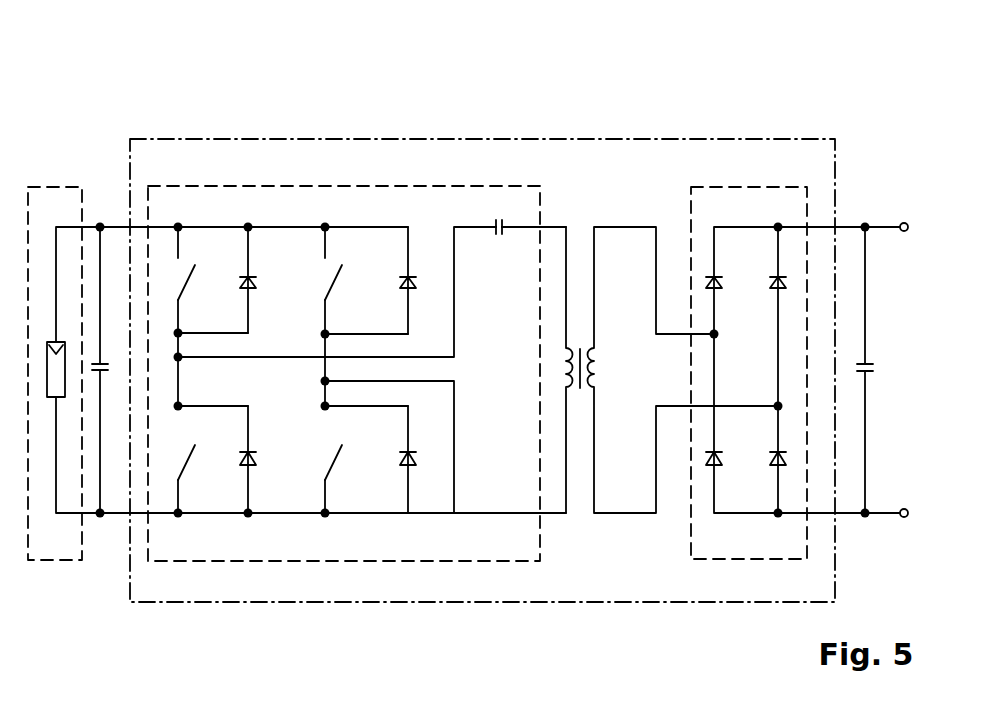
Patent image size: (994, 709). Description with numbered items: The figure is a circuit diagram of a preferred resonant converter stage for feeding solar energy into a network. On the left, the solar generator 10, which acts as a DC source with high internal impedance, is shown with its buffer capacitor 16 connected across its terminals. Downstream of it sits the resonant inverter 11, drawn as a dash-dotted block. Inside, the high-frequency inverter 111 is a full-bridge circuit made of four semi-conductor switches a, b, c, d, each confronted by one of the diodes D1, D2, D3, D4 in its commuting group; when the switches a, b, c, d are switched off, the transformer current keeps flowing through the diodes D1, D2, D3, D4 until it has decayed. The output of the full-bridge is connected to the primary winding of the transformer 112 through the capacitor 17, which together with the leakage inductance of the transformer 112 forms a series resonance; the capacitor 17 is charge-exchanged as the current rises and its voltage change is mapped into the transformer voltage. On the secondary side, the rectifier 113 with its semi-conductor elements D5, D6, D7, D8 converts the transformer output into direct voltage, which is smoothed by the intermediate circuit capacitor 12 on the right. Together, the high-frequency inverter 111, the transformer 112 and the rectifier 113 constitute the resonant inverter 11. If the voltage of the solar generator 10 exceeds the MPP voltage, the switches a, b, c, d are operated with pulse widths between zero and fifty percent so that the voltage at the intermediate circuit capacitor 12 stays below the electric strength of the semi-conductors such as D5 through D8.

The solar generator 10 is at (55, 187).
The buffer capacitor 16 is at (107, 332).
The resonant inverter 11 is at (378, 139).
The high-frequency inverter 111 is at (357, 314).
The capacitor 17 is at (503, 226).
The transformer 112 is at (580, 227).
The rectifier 113 is at (799, 313).
The intermediate circuit capacitor 12 is at (873, 343).
The diode D1 is at (262, 274).
The diode D2 is at (421, 274).
The diode D3 is at (254, 465).
The diode D4 is at (414, 465).
The semi-conductor switch D5 is at (725, 274).
The semi-conductor switch D6 is at (771, 287).
The semi-conductor switch D7 is at (716, 466).
The semi-conductor switch D8 is at (771, 458).
The semi-conductor switch a is at (192, 277).
The semi-conductor switch b is at (339, 277).
The semi-conductor switch c is at (192, 455).
The semi-conductor switch d is at (339, 455).